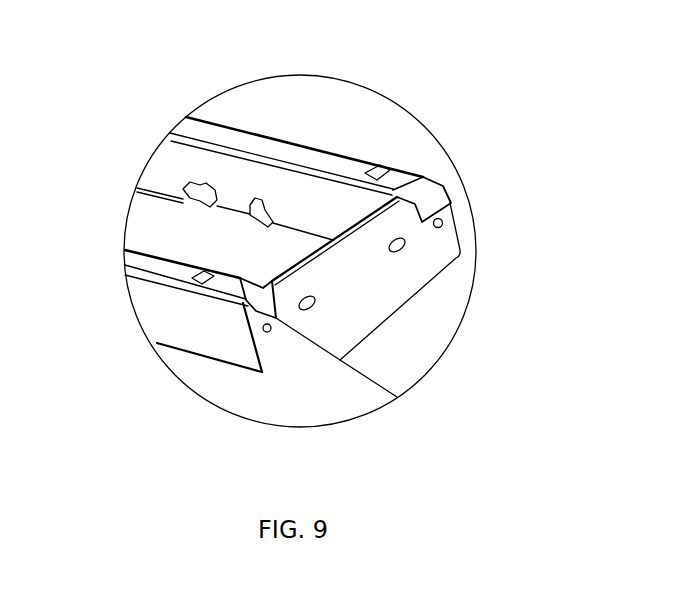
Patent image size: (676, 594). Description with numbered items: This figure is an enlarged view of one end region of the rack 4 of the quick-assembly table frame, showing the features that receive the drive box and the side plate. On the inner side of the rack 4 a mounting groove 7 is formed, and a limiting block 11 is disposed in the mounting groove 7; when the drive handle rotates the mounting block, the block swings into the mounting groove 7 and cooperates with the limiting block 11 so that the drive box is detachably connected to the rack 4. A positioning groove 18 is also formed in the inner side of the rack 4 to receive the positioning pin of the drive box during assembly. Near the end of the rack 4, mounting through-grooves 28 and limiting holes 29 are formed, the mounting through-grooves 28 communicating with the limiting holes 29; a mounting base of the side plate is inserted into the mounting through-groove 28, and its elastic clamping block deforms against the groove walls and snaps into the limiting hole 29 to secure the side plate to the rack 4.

The rack 4 is at (358, 268).
The mounting groove 7 is at (198, 185).
The limiting block 11 is at (205, 190).
The positioning groove 18 is at (255, 205).
The mounting through-groove 28 is at (433, 198).
The limiting hole 29 is at (378, 172).